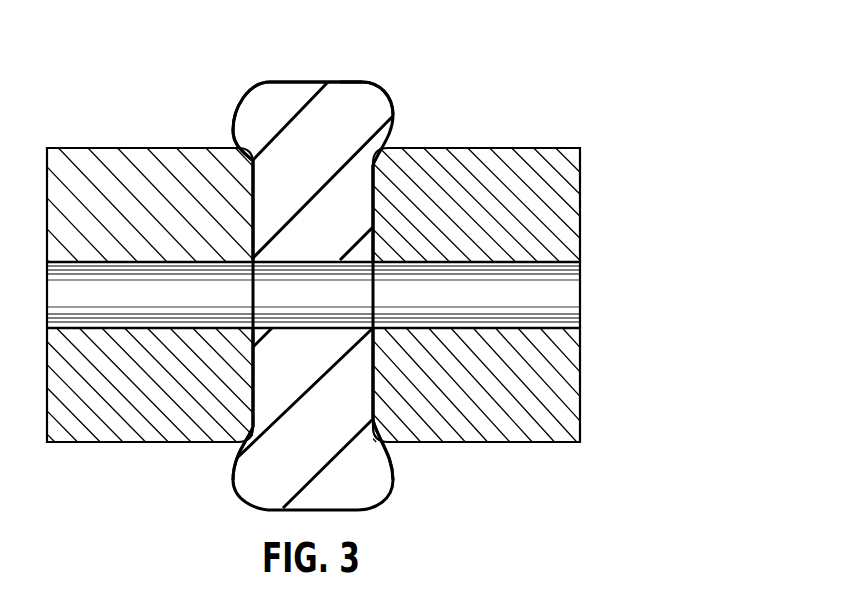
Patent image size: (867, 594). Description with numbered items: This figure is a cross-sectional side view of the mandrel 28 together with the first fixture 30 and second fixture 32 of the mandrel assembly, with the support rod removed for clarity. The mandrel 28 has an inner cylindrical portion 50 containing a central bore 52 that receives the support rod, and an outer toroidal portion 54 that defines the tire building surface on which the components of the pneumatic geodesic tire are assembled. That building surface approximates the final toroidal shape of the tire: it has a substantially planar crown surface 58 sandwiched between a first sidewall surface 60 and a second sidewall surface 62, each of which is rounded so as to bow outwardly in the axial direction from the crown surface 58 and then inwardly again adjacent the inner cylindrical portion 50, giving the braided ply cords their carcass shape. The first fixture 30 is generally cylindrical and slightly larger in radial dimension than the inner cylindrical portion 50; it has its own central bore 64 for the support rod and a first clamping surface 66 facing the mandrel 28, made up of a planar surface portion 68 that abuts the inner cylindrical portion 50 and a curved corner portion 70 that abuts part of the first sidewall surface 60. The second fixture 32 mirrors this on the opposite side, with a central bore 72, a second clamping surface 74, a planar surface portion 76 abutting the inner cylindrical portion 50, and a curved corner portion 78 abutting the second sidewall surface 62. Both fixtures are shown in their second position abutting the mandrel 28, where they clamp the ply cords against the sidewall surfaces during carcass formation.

The mandrel 28 is at (285, 80).
The first fixture 30 is at (549, 146).
The second fixture 32 is at (83, 146).
The inner cylindrical portion 50 is at (279, 190).
The central bore 52 is at (327, 263).
The outer toroidal portion 54 is at (350, 110).
The crown surface 58 is at (302, 80).
The first sidewall surface 60 is at (397, 110).
The second sidewall surface 62 is at (231, 113).
The central bore 64 is at (435, 263).
The first clamping surface 66 is at (368, 213).
The planar surface portion 68 is at (372, 394).
The curved corner portion 70 is at (390, 447).
The central bore 72 is at (168, 263).
The second clamping surface 74 is at (260, 363).
The planar surface portion 76 is at (256, 239).
The curved corner portion 78 is at (250, 434).